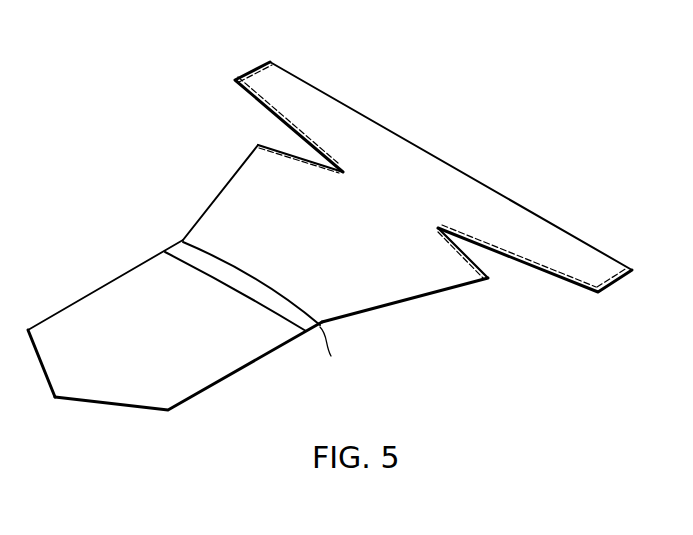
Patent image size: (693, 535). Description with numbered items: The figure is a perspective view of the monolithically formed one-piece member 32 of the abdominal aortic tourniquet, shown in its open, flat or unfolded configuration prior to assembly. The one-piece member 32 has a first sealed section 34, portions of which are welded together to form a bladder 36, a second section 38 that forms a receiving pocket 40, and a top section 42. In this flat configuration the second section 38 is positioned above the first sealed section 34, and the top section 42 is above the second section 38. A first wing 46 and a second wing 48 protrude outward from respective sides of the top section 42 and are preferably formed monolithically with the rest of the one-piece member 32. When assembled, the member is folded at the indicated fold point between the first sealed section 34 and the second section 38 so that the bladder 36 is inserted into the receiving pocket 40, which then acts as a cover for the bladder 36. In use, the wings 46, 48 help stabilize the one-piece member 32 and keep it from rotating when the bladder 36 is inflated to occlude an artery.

The one-piece member 32 is at (339, 233).
The first sealed section 34 is at (197, 397).
The bladder 36 is at (108, 300).
The second section 38 is at (415, 300).
The receiving pocket 40 is at (337, 238).
The top section 42 is at (414, 160).
The first wing 46 is at (283, 82).
The second wing 48 is at (600, 259).